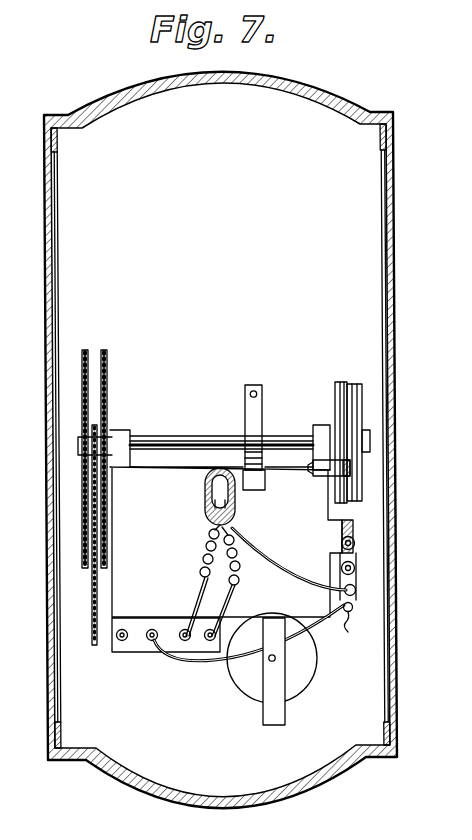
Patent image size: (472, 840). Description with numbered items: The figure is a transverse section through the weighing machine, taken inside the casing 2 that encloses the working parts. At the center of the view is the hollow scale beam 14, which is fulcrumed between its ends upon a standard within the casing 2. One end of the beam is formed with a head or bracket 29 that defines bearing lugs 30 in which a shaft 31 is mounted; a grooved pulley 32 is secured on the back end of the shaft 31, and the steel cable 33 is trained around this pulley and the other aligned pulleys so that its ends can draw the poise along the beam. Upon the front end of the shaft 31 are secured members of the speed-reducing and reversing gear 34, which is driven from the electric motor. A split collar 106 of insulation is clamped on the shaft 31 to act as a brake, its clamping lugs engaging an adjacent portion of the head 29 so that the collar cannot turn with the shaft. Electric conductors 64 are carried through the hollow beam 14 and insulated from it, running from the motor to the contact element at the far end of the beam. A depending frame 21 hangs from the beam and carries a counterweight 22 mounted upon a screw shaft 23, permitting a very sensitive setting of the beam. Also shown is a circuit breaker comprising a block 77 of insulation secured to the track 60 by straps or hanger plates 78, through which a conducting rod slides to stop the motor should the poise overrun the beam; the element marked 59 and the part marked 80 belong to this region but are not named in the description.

The casing 2 is at (394, 352).
The beam 14 is at (205, 501).
The depending frame 21 is at (285, 723).
The counterweight 22 is at (248, 688).
The screw shaft 23 is at (463, 695).
The head or bracket 29 is at (228, 615).
The bearing lugs 30 is at (122, 433).
The shaft 31 is at (171, 440).
The grooved pulley 32 is at (358, 381).
The steel cable 33 is at (332, 382).
The speed-reducing and reversing gear 34 is at (91, 486).
The hub 59 is at (365, 456).
The track 60 is at (354, 528).
The electric conductors 64 is at (240, 582).
The block of insulation 77 is at (352, 580).
The straps or hanger plates 78 is at (356, 553).
The wire 80 is at (352, 627).
The split collar 106 is at (244, 424).